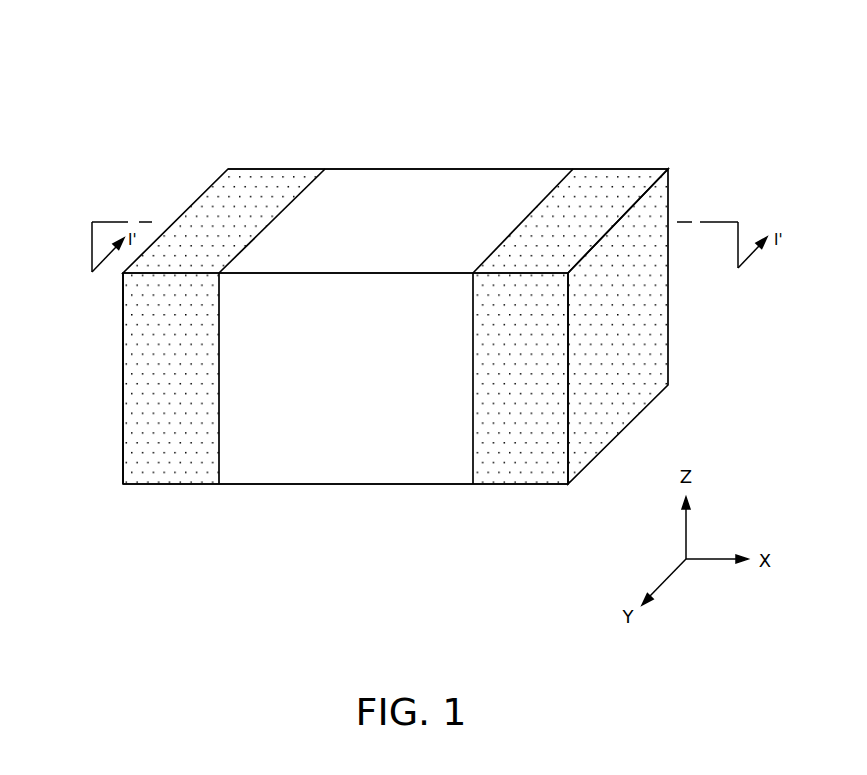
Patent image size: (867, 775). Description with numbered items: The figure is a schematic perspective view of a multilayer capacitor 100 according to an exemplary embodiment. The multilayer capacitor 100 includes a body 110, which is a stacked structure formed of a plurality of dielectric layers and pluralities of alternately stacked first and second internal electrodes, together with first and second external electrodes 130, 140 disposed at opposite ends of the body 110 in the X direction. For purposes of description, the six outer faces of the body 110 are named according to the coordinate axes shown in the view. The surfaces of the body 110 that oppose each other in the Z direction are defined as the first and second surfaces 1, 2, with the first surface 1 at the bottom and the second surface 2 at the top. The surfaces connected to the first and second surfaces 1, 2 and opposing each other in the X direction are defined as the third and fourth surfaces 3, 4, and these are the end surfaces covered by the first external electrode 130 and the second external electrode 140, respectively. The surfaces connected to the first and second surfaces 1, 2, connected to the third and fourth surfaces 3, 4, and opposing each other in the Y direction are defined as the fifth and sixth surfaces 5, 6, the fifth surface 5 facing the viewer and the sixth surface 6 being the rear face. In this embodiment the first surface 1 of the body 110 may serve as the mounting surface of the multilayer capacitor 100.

The multilayer capacitor 100 is at (404, 38).
The body 110 is at (458, 196).
The first external electrode 130 is at (253, 184).
The second external electrode 140 is at (599, 180).
The first surface 1 is at (357, 460).
The second surface 2 is at (516, 185).
The third surface 3 is at (140, 388).
The fourth surface 4 is at (657, 334).
The fifth surface 5 is at (284, 460).
The sixth surface 6 is at (348, 194).